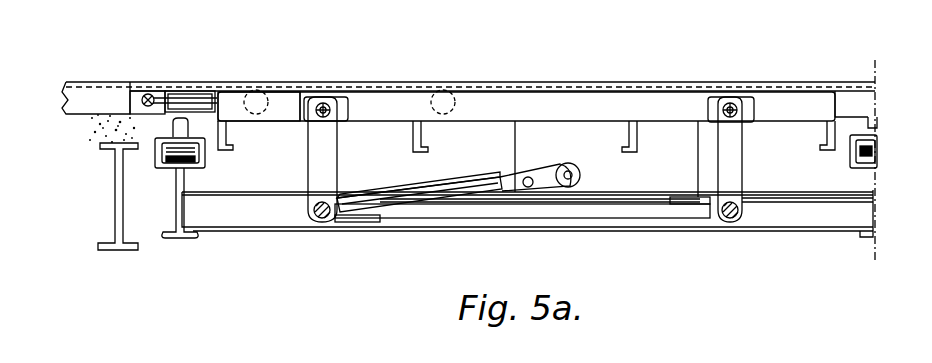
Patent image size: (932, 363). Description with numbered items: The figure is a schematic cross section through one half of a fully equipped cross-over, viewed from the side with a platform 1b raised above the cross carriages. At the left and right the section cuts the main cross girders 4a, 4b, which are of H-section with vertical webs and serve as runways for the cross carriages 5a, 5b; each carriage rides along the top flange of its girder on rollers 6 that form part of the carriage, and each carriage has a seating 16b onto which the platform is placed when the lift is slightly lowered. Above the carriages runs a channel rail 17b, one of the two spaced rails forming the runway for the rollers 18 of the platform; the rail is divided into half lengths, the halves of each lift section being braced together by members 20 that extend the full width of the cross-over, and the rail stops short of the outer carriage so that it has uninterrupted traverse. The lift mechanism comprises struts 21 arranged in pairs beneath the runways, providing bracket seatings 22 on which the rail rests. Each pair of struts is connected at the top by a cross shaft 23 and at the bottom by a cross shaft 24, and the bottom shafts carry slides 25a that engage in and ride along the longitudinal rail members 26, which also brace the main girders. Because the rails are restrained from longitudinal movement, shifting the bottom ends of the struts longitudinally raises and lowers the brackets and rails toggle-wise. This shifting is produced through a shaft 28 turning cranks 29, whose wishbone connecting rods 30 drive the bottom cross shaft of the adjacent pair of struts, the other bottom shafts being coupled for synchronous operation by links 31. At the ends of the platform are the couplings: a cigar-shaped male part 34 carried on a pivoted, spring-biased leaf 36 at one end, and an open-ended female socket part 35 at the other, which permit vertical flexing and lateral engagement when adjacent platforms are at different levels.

The platform 1b is at (876, 78).
The main cross girder 4a is at (177, 192).
The main cross girder 4b is at (875, 221).
The cross carriage 5a is at (218, 104).
The cross carriage 5b is at (853, 128).
The roller 6 is at (160, 160).
The seating 16b is at (179, 90).
The channel rail 17b is at (518, 101).
The roller 18 is at (262, 92).
The member 20 is at (424, 150).
The strut 21 is at (313, 160).
The bracket seating 22 is at (346, 102).
The cross shaft 23 is at (323, 103).
The cross shaft 24 is at (322, 220).
The slide 25a is at (366, 223).
The longitudinal rail member 26 is at (236, 222).
The shaft 28 is at (569, 174).
The crank 29 is at (543, 178).
The wishbone connecting rod 30 is at (448, 195).
The link 31 is at (570, 218).
The male coupling part 34 is at (147, 93).
The female socket part 35 is at (136, 94).
The leaf 36 is at (198, 128).